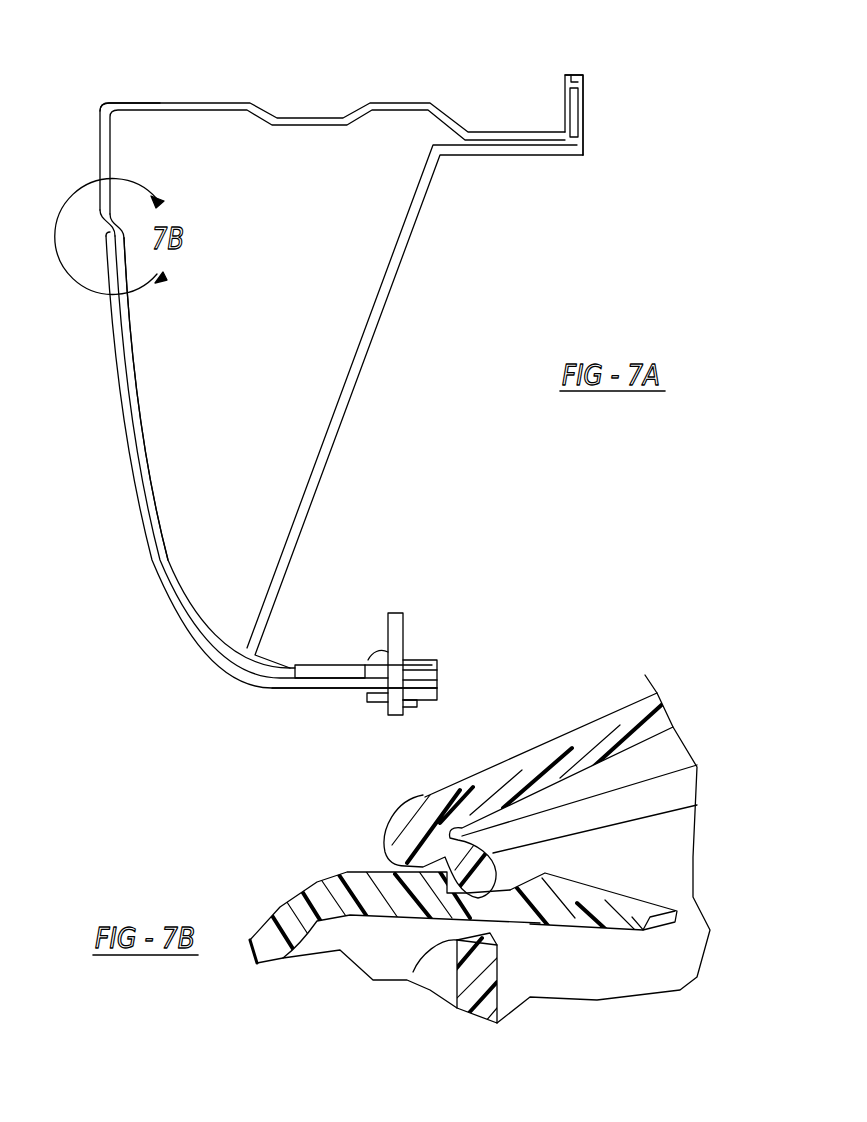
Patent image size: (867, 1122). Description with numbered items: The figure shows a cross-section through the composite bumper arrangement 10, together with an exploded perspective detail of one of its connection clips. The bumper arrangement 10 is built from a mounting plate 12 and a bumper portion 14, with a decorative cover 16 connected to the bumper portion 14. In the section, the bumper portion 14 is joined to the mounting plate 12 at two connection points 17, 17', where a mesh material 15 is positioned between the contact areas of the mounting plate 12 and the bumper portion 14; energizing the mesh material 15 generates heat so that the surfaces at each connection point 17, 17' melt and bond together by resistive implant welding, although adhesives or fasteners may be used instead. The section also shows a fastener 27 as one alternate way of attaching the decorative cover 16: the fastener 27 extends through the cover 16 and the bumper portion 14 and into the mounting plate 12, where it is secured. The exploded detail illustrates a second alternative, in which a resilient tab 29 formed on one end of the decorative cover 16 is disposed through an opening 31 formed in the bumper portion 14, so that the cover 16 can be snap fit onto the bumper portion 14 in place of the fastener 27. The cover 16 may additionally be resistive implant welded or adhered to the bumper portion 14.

In FIG. 7A, the composite bumper arrangement 10 is at (154, 84).
In FIG. 7A, the mounting plate 12 is at (543, 156).
In FIG. 7A, the bumper portion 14 is at (178, 105).
In FIG. 7B, the bumper portion 14 is at (520, 780).
In FIG. 7A, the mesh material 15 is at (572, 100).
In FIG. 7A, the decorative cover 16 is at (138, 500).
In FIG. 7B, the decorative cover 16 is at (283, 910).
In FIG. 7A, the connection point 17 is at (321, 718).
In FIG. 7A, the connection point 17' is at (612, 108).
In FIG. 7A, the fastener 27 is at (264, 312).
In FIG. 7B, the resilient tab 29 is at (545, 905).
In FIG. 7B, the opening 31 is at (457, 990).